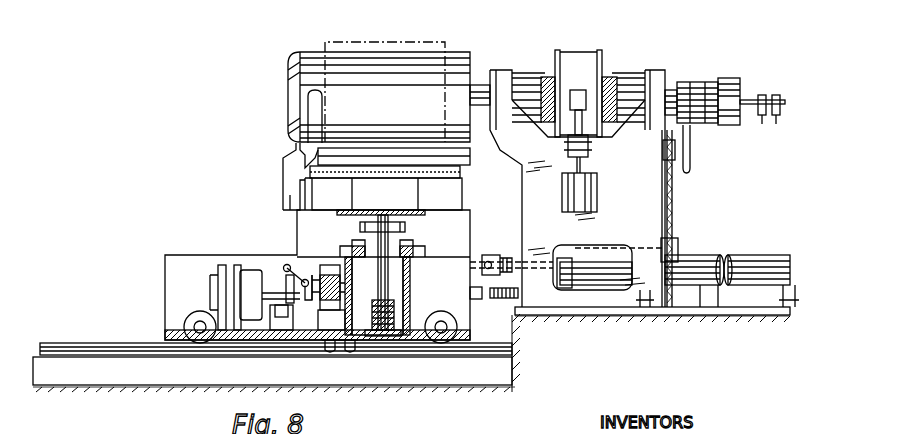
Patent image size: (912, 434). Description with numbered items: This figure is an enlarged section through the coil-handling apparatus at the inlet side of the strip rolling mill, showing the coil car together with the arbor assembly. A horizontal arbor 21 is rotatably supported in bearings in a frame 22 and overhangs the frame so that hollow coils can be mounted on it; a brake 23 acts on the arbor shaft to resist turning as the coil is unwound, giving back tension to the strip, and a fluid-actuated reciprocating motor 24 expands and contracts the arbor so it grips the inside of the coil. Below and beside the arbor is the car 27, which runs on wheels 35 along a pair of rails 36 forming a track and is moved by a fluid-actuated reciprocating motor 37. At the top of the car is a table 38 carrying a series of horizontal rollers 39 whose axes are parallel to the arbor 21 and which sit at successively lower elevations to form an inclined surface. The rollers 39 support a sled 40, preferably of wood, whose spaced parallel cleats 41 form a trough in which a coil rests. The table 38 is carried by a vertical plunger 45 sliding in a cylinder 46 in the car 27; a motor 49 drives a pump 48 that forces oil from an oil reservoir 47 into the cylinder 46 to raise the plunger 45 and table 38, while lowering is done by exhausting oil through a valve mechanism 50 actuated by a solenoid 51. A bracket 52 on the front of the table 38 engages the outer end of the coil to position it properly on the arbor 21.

The arbor 21 is at (398, 92).
The frame 22 is at (524, 220).
The brake 23 is at (583, 60).
The fluid-actuated reciprocating motor 24 is at (706, 82).
The car 27 is at (297, 229).
The wheels 35 is at (441, 316).
The rails 36 is at (80, 345).
The fluid-actuated reciprocating motor 37 is at (708, 262).
The table 38 is at (320, 190).
The horizontal rollers 39 is at (442, 160).
The sled 40 is at (312, 152).
The cleats 41 is at (432, 142).
The vertical plunger 45 is at (395, 238).
The cylinder 46 is at (398, 276).
The oil reservoir 47 is at (340, 345).
The pump 48 is at (324, 248).
The motor 49 is at (247, 265).
The valve mechanism 50 is at (300, 265).
The solenoid 51 is at (290, 340).
The bracket 52 is at (283, 195).